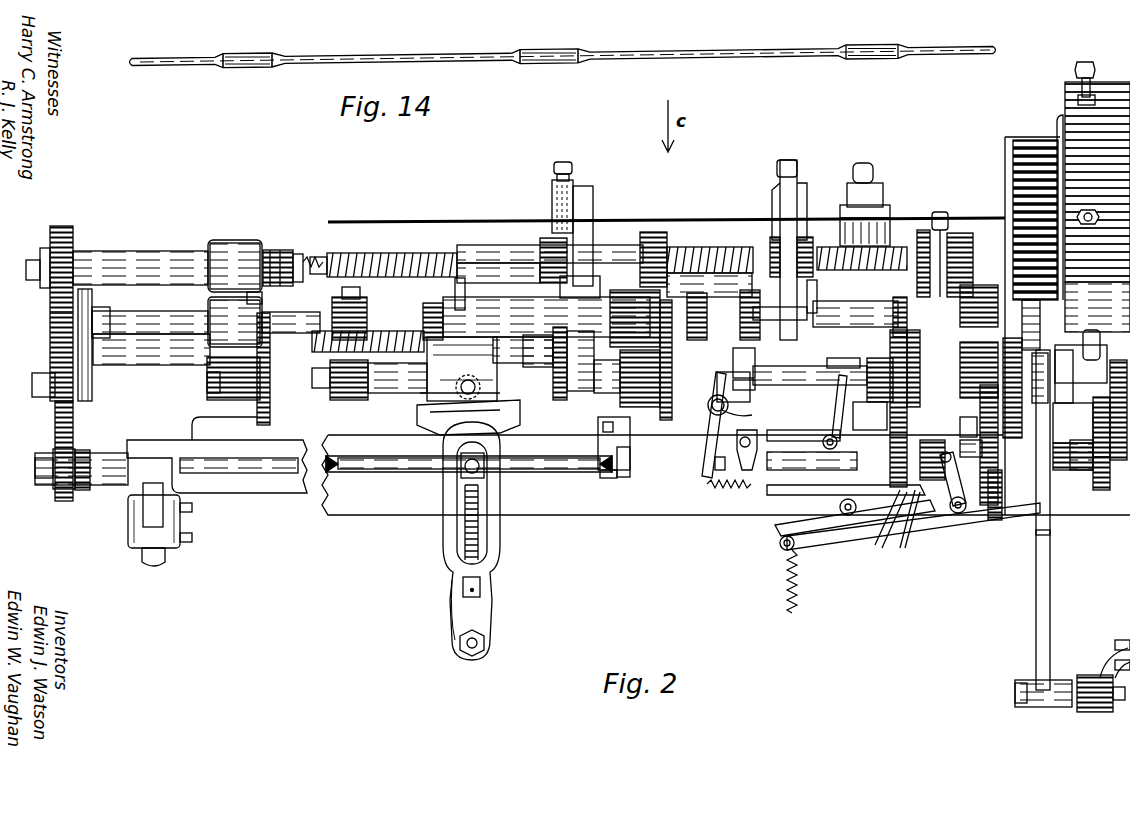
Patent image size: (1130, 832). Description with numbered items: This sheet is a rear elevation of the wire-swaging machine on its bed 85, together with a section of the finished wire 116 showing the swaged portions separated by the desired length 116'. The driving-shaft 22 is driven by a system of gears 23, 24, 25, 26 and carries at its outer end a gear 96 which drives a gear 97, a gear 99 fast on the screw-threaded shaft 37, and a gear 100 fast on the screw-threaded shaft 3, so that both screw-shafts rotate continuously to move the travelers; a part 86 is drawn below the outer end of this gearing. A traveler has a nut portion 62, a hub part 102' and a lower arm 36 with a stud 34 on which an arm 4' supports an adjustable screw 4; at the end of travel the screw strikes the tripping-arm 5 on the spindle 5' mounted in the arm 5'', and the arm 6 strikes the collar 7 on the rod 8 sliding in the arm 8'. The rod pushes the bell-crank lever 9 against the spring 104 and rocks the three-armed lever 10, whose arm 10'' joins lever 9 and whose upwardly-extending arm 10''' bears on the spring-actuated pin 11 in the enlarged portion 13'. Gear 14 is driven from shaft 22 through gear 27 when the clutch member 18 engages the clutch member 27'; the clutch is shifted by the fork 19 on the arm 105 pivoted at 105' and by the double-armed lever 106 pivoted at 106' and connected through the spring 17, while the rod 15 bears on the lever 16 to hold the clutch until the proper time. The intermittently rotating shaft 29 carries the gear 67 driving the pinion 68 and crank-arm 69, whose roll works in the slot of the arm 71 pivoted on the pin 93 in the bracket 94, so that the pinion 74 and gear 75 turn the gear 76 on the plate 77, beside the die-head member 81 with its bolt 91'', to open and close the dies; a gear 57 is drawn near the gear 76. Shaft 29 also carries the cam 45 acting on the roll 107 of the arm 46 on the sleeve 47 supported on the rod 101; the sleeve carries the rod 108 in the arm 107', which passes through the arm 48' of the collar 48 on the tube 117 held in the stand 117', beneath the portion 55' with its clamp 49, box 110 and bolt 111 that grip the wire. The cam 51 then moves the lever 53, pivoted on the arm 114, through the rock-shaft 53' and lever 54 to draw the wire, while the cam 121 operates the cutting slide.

In FIG. 14, the wire 116 is at (563, 45).
In FIG. 2, the wire 116 is at (666, 213).
In FIG. 14, the desired length of wire 116' is at (405, 62).
In FIG. 2, the driving-shaft 22 is at (233, 473).
In FIG. 2, the gear 100 is at (73, 240).
In FIG. 2, the gear 99 is at (55, 318).
In FIG. 2, the supporting-rod 101 is at (157, 321).
In FIG. 2, the gear 97 is at (73, 418).
In FIG. 2, the gear 96 is at (68, 492).
In FIG. 2, the block 86 is at (166, 556).
In FIG. 2, the cam 121 is at (272, 405).
In FIG. 2, the screw-threaded shaft 3 is at (351, 256).
In FIG. 2, the screw-threaded shaft 37 is at (292, 340).
In FIG. 2, the shaft 29 is at (382, 399).
In FIG. 2, the rod 108 is at (470, 256).
In FIG. 2, the arm 48' is at (505, 294).
In FIG. 2, the collar 48 is at (536, 253).
In FIG. 2, the tube 117 is at (557, 307).
In FIG. 2, the box 110 is at (556, 185).
In FIG. 2, the bolt 111 is at (565, 160).
In FIG. 2, the upwardly-extending portion 55' is at (602, 229).
In FIG. 2, the clamp 49 is at (602, 223).
In FIG. 2, the sleeve 47 is at (442, 303).
In FIG. 2, the arm 46 is at (548, 397).
In FIG. 2, the lever 54 is at (497, 399).
In FIG. 2, the cam 51 is at (430, 402).
In FIG. 2, the rock-shaft 53' is at (446, 433).
In FIG. 2, the lever 53 is at (488, 539).
In FIG. 2, the arm 114 is at (453, 590).
In FIG. 2, the cam 45 is at (562, 398).
In FIG. 2, the roll 107 is at (591, 373).
In FIG. 2, the lower arm 36 is at (629, 442).
In FIG. 2, the arm 8' is at (618, 475).
In FIG. 2, the rod 8 is at (624, 482).
In FIG. 2, the bed 85 is at (613, 510).
In FIG. 2, the arm 107' is at (680, 254).
In FIG. 2, the stand 117' is at (701, 287).
In FIG. 2, the bracket 102' is at (796, 250).
In FIG. 2, the nut portion 62 is at (884, 246).
In FIG. 2, the gear 57 is at (975, 286).
In FIG. 2, the stud 34 is at (733, 380).
In FIG. 2, the tripping-arm 5 is at (710, 425).
In FIG. 2, the spindle 5' is at (745, 423).
In FIG. 2, the arm 5'' is at (707, 465).
In FIG. 2, the adjustable screw 4 is at (733, 390).
In FIG. 2, the arm 4' is at (748, 393).
In FIG. 2, the arm 6 is at (706, 451).
In FIG. 2, the collar 7 is at (715, 467).
In FIG. 2, the spring-actuated pin 11 is at (835, 371).
In FIG. 2, the enlarged portion 13' is at (856, 378).
In FIG. 2, the upwardly-extending arm 10''' is at (817, 406).
In FIG. 2, the three-armed lever 10 is at (803, 433).
In FIG. 2, the arm 10'' is at (812, 474).
In FIG. 2, the lever 16 is at (865, 425).
In FIG. 2, the gear 14 is at (907, 410).
In FIG. 2, the bell-crank lever 9 is at (760, 470).
In FIG. 2, the spring 104 is at (745, 489).
In FIG. 2, the rod 15 is at (846, 488).
In FIG. 2, the double-armed lever 106 is at (855, 516).
In FIG. 2, the pivot 106' is at (767, 538).
In FIG. 2, the arm 105 is at (913, 530).
In FIG. 2, the pivot 105' is at (930, 519).
In FIG. 2, the spring 17 is at (785, 580).
In FIG. 2, the gear 27 is at (881, 542).
In FIG. 2, the clutch member 27' is at (903, 530).
In FIG. 2, the clutch member 18 is at (935, 480).
In FIG. 2, the fork 19 is at (955, 520).
In FIG. 2, the pinion 68 is at (992, 520).
In FIG. 2, the crank-arm 69 is at (1012, 515).
In FIG. 2, the arm 71 is at (1038, 556).
In FIG. 2, the pin 93 is at (1062, 701).
In FIG. 2, the bracket 94 is at (1110, 655).
In FIG. 2, the bolt 91'' is at (1076, 67).
In FIG. 2, the gear 81 is at (1100, 80).
In FIG. 2, the plate 77 is at (1058, 118).
In FIG. 2, the gear 76 is at (1018, 137).
In FIG. 2, the gear 67 is at (1010, 338).
In FIG. 2, the gear 75 is at (1040, 325).
In FIG. 2, the pinion 74 is at (1081, 369).
In FIG. 2, the gear 23 is at (1083, 427).
In FIG. 2, the gear 24 is at (1120, 462).
In FIG. 2, the gear 25 is at (1080, 472).
In FIG. 2, the gear 26 is at (1100, 492).